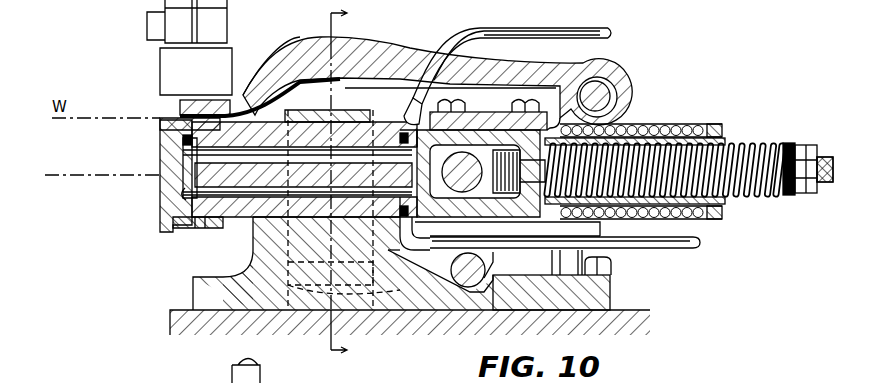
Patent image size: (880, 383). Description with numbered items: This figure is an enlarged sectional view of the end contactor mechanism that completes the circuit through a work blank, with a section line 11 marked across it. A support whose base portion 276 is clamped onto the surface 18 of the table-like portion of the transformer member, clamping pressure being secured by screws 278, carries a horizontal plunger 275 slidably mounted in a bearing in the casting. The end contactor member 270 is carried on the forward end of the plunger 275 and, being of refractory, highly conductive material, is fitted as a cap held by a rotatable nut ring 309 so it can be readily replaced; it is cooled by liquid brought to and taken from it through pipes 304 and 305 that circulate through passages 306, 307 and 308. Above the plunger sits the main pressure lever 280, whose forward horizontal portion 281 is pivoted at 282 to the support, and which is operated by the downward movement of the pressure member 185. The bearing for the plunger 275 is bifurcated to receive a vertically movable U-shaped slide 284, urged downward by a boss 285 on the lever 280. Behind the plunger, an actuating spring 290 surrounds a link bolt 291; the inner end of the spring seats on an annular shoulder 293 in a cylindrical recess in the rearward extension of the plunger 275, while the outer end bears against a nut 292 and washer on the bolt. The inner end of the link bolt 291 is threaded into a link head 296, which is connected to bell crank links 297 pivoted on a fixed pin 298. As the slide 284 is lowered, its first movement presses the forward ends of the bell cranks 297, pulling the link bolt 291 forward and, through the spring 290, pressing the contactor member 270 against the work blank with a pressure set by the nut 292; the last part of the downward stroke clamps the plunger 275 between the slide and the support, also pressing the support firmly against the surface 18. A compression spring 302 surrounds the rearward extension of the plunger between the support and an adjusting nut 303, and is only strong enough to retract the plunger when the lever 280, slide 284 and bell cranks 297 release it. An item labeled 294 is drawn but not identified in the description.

The surface of the table-like portion of the transformer member 18 is at (655, 310).
The pressure member 185 is at (162, 57).
The forward horizontal portion 281 is at (180, 106).
The U-shaped slide 284 is at (290, 62).
The main pressure lever 280 is at (368, 50).
The boss 285 is at (347, 84).
The link head 296 is at (476, 113).
The pivot 282 is at (610, 86).
The pipe 304 is at (598, 26).
The compression spring 302 is at (690, 125).
The adjusting nut 303 is at (716, 124).
The actuating spring 290 is at (775, 140).
The link bolt 291 is at (826, 145).
The nut 292 is at (789, 197).
The pipe 305 is at (702, 245).
The screws 278 is at (613, 268).
The bracket 294 is at (458, 221).
The annular shoulder 293 is at (490, 268).
The fixed pin 298 is at (466, 288).
The bell crank links 297 is at (412, 295).
The base portion 276 is at (193, 296).
The horizontal plunger 275 is at (241, 222).
The end contactor member 270 is at (170, 234).
The rotatable nut ring 309 is at (205, 230).
The passage 306 is at (215, 155).
The passage 307 is at (183, 165).
The passage 308 is at (185, 195).
The section line 11- 11 is at (350, 184).